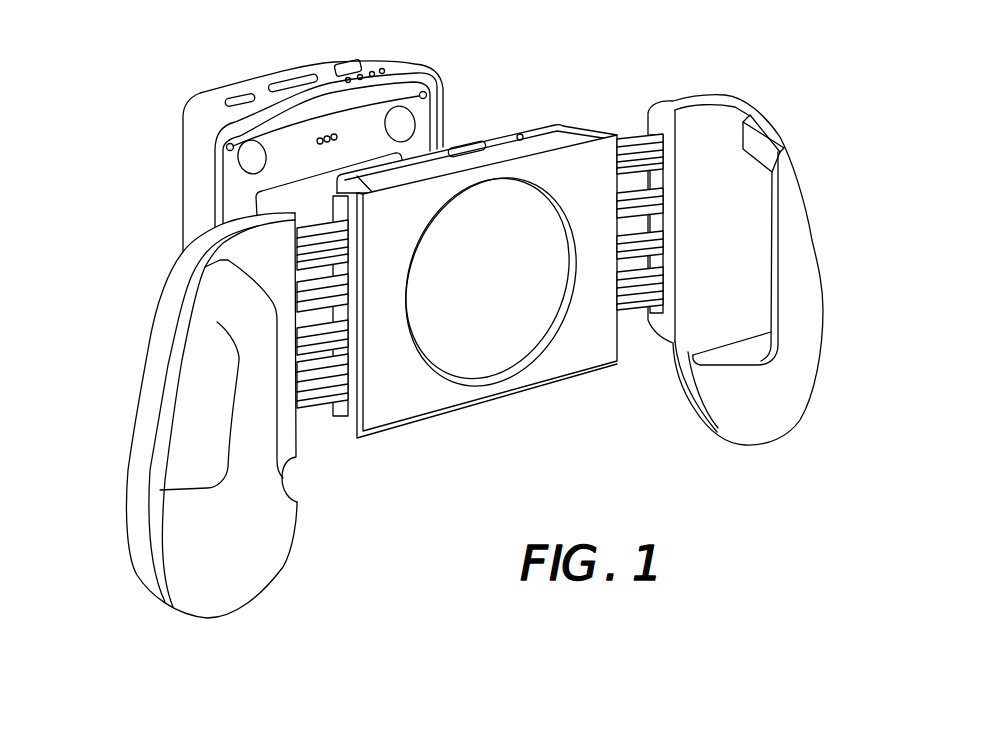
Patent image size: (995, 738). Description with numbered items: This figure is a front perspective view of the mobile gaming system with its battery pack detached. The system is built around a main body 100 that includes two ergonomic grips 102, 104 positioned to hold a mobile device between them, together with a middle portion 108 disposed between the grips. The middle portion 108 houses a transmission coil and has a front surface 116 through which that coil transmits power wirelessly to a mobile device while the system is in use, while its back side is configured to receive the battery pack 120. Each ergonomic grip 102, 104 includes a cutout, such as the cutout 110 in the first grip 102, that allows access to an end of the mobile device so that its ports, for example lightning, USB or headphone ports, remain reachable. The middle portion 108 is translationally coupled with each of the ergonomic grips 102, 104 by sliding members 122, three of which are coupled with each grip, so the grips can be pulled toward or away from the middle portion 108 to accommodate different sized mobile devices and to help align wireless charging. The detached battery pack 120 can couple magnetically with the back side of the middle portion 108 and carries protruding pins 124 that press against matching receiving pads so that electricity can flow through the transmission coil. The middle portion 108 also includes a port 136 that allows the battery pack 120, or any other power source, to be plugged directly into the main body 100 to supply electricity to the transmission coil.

The main body 100 is at (148, 42).
The ergonomic grip 102 is at (133, 534).
The ergonomic grip 104 is at (785, 407).
The middle portion 108 is at (532, 410).
The cutout 110 is at (193, 445).
The front surface 116 is at (412, 384).
The battery pack 120 is at (190, 166).
The sliding members 122 is at (305, 390).
The protruding pins 124 is at (325, 133).
The port 136 is at (475, 146).